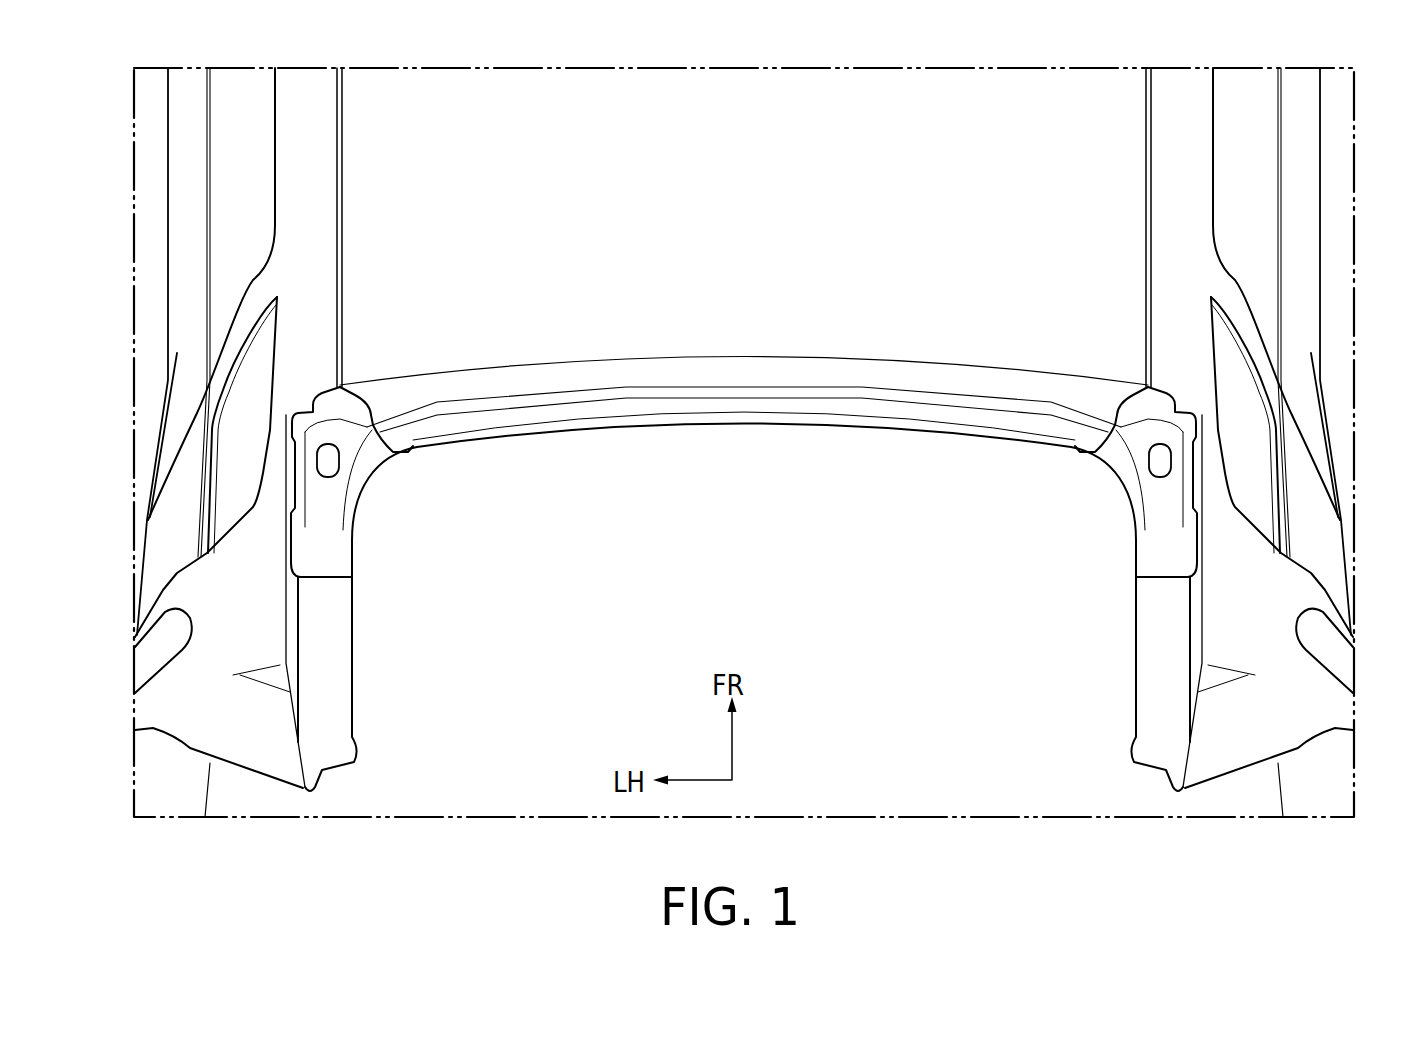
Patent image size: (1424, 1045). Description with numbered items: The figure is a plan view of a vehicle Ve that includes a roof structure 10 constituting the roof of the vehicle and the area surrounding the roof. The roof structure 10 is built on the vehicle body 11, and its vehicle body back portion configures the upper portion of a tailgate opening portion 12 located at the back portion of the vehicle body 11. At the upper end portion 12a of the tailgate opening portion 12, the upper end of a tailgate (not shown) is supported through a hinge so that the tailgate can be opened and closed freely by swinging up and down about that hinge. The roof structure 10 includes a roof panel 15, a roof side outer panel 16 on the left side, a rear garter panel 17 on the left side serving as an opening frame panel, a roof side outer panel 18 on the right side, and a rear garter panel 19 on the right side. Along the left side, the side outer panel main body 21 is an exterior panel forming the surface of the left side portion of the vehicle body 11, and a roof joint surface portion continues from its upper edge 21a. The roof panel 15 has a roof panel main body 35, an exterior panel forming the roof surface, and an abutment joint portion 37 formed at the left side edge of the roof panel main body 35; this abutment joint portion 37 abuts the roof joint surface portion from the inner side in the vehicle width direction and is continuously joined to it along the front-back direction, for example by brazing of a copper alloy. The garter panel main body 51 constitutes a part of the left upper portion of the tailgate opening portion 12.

The vehicle Ve is at (124, 104).
The roof structure 10 is at (302, 140).
The vehicle body 11 is at (155, 198).
The tailgate opening portion 12 is at (728, 350).
The upper end portion of the tailgate opening portion 12a is at (897, 373).
The roof panel 15 is at (762, 96).
The roof side outer panel on the left side 16 is at (290, 287).
The rear garter panel on the left side 17 is at (252, 589).
The roof side outer panel on the right side 18 is at (1193, 245).
The rear garter panel on the right side 19 is at (1163, 413).
The side outer panel main body 21 is at (317, 217).
The upper edge of the side outer panel main body 21a is at (343, 150).
The roof panel main body 35 is at (672, 112).
The abutment joint portion 37 is at (338, 120).
The garter panel main body 51 is at (348, 418).